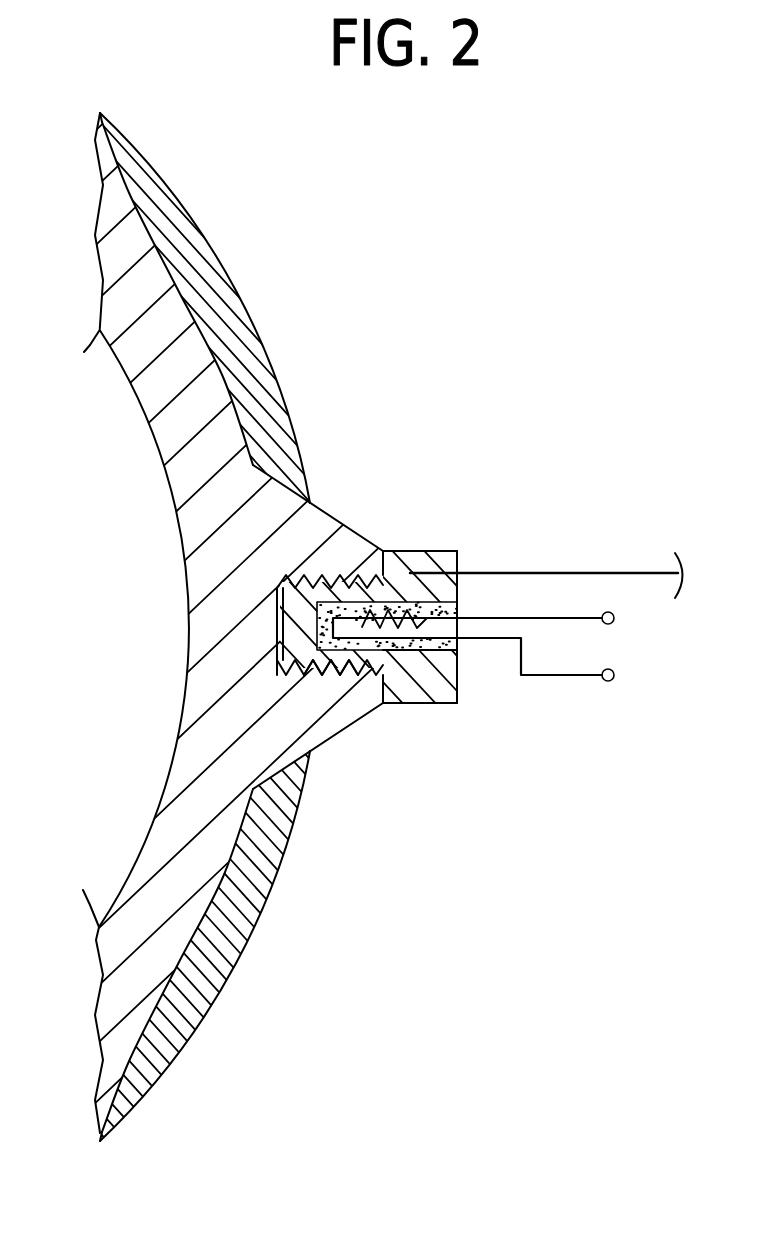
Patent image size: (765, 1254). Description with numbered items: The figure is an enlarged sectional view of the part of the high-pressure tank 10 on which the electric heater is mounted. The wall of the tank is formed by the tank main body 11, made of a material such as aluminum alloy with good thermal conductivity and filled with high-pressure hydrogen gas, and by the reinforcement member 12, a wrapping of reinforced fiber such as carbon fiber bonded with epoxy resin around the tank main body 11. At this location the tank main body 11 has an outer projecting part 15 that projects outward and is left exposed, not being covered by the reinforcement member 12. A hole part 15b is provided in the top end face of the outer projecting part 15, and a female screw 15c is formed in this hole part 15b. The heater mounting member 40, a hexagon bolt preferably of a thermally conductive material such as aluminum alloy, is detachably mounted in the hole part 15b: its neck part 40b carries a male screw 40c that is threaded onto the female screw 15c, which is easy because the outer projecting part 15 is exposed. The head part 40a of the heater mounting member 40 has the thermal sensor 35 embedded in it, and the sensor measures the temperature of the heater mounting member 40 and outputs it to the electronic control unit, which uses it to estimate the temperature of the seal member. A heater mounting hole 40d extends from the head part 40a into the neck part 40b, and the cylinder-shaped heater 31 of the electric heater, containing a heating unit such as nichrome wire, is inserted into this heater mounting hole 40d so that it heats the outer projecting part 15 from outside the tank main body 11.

The high-pressure tank 10 is at (243, 181).
The tank main body 11 is at (157, 402).
The reinforcement member 12 is at (233, 288).
The outer projecting part 15 is at (343, 543).
The hole part 15b is at (278, 621).
The female screw 15c is at (298, 597).
The heater mounting member 40 is at (435, 551).
The head part 40a is at (445, 688).
The neck part 40b is at (312, 662).
The male screw 40c is at (342, 662).
The heater mounting hole 40d is at (428, 642).
The heater 31 is at (460, 648).
The thermal sensor 35 is at (583, 572).